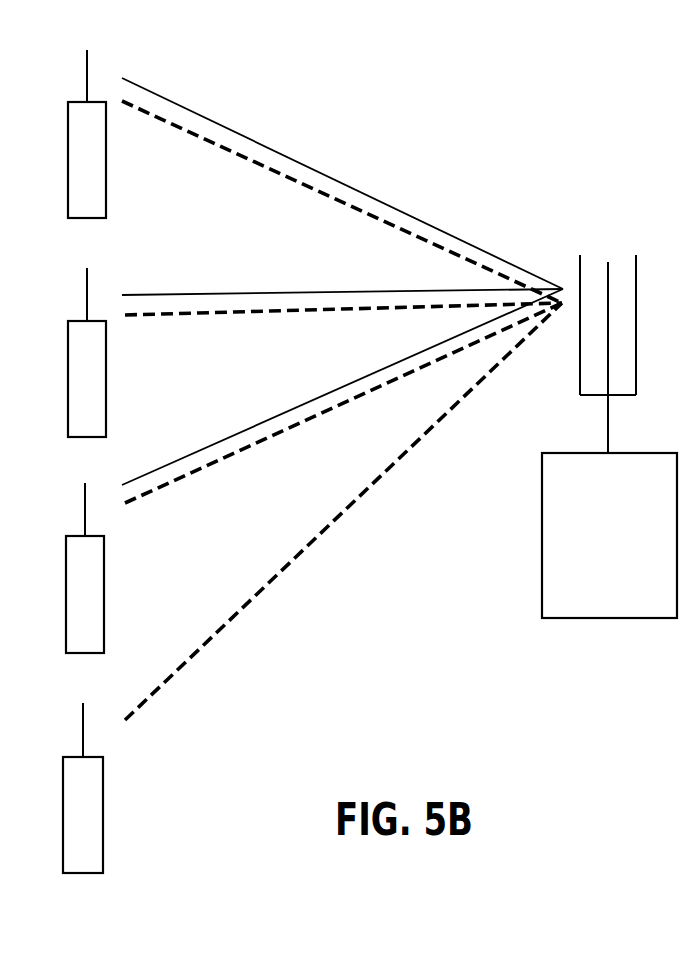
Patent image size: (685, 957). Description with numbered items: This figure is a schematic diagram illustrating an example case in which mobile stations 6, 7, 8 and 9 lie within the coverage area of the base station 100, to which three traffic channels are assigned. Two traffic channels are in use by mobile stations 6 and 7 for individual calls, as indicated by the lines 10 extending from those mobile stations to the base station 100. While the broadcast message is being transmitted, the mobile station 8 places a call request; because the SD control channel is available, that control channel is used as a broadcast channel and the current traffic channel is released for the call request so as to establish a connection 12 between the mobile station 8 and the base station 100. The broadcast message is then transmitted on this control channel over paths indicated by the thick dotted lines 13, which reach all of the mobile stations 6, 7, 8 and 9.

The mobile station 6 is at (88, 219).
The mobile station 7 is at (88, 438).
The mobile station 8 is at (86, 654).
The mobile station 9 is at (84, 874).
The lines 10 is at (298, 163).
The connection 12 is at (225, 435).
The thick dotted lines 13 is at (193, 137).
The base station 100 is at (621, 619).